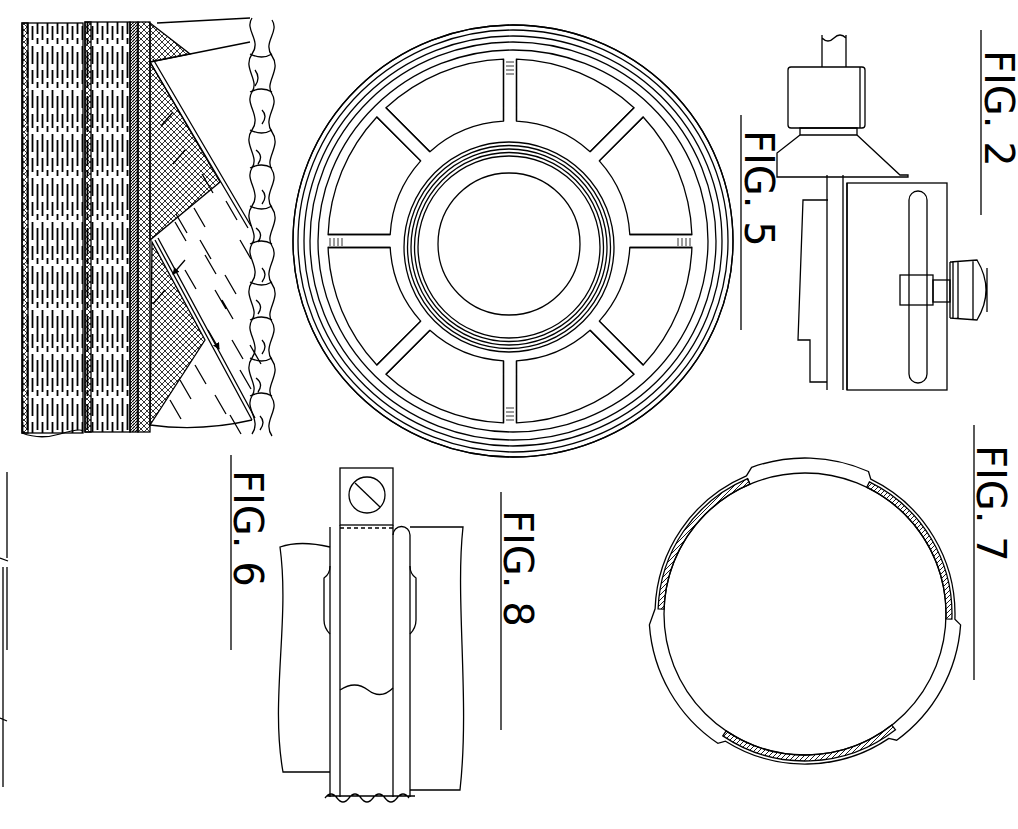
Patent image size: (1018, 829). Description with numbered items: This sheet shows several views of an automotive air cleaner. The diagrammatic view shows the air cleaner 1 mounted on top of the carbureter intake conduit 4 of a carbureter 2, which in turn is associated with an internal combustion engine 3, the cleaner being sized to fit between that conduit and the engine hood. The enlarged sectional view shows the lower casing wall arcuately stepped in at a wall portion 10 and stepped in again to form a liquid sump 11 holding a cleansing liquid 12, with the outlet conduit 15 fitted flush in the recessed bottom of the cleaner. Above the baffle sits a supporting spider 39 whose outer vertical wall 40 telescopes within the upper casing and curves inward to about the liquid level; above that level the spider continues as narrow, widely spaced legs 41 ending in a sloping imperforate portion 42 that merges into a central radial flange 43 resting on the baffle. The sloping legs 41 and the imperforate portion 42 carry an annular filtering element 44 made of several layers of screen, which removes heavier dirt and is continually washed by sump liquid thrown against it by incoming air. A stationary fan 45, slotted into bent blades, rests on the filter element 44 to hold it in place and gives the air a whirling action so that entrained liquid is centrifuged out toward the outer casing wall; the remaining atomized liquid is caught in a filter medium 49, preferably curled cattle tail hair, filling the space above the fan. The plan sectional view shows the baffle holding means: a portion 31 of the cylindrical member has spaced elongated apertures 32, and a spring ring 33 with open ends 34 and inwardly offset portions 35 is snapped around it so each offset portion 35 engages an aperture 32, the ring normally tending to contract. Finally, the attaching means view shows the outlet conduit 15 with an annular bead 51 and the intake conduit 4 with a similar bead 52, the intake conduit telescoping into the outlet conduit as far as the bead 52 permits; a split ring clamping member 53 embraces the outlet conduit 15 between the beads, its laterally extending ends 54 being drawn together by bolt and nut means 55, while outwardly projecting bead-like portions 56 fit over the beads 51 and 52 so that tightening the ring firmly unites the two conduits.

In FIG. 2, the air cleaner 1 is at (972, 308).
In FIG. 2, the carbureter 2 is at (912, 287).
In FIG. 2, the internal combustion engine 3 is at (897, 286).
In FIG. 2, the carbureter intake conduit 4 is at (940, 298).
In FIG. 8, the carbureter intake conduit 4 is at (306, 703).
In FIG. 6, the arcuately stepped-in wall portion 10 is at (133, 433).
In FIG. 6, the liquid sump 11 is at (26, 433).
In FIG. 6, the cleansing liquid 12 is at (88, 433).
In FIG. 8, the outlet conduit 15 is at (447, 678).
In FIG. 7, the portion of cylindrical member 31 is at (682, 537).
In FIG. 7, the elongated apertures 32 is at (749, 483).
In FIG. 7, the spring ring 33 is at (927, 523).
In FIG. 7, the open ends 34 is at (833, 763).
In FIG. 7, the inwardly offset portions 35 is at (780, 470).
In FIG. 6, the supporting spider 39 is at (142, 434).
In FIG. 5, the supporting spider 39 is at (618, 436).
In FIG. 5, the outer vertical wall 40 is at (549, 449).
In FIG. 5, the legs 41 is at (410, 145).
In FIG. 5, the sloping imperforate portion 42 is at (458, 138).
In FIG. 5, the central radial flange 43 is at (465, 177).
In FIG. 6, the annular filtering element 44 is at (200, 342).
In FIG. 6, the stationary fan 45 is at (222, 350).
In FIG. 6, the filter medium 49 is at (272, 296).
In FIG. 8, the annular bead 51 is at (402, 723).
In FIG. 8, the bead 52 is at (337, 752).
In FIG. 8, the split ring clamping member 53 is at (358, 668).
In FIG. 8, the laterally extending ends 54 is at (362, 470).
In FIG. 8, the bolt and nut means 55 is at (350, 508).
In FIG. 8, the bead-like portions 56 is at (330, 598).